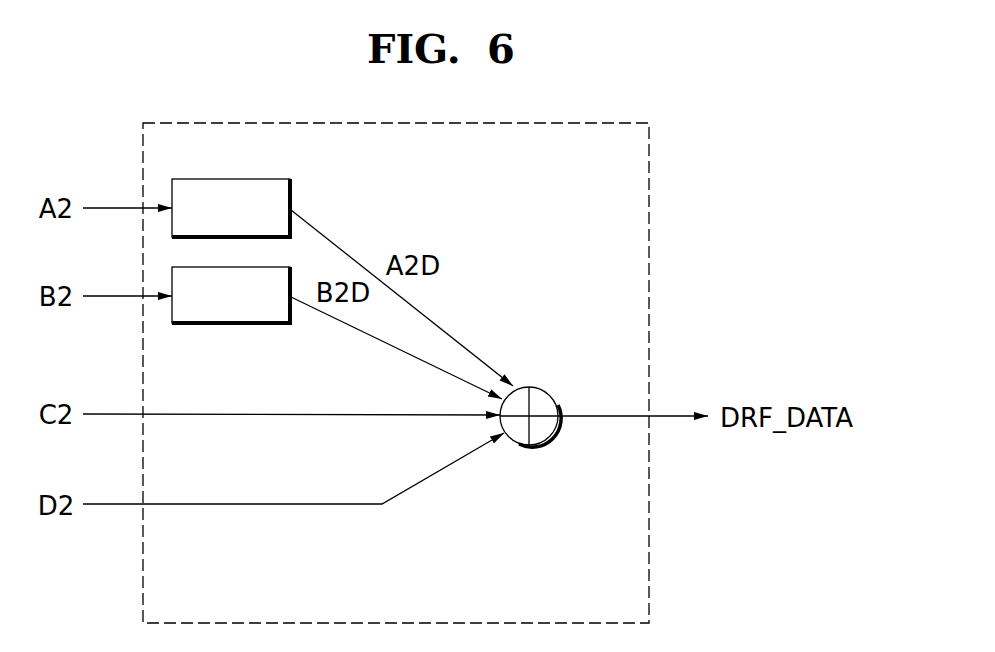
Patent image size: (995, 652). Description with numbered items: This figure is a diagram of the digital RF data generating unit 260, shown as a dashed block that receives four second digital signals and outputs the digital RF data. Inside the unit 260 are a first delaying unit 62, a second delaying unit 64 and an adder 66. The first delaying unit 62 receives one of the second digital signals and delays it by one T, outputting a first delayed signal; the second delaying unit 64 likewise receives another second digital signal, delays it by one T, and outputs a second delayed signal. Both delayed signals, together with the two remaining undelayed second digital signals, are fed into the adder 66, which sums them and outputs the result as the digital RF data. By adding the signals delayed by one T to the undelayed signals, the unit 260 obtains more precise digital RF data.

The first delaying unit 62 is at (240, 178).
The second delaying unit 64 is at (231, 325).
The adder 66 is at (530, 387).
The digital RF data generating unit 260 is at (649, 158).